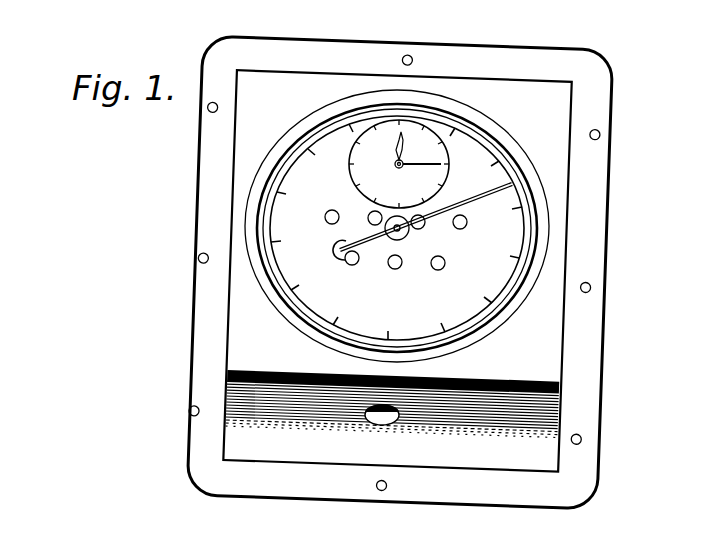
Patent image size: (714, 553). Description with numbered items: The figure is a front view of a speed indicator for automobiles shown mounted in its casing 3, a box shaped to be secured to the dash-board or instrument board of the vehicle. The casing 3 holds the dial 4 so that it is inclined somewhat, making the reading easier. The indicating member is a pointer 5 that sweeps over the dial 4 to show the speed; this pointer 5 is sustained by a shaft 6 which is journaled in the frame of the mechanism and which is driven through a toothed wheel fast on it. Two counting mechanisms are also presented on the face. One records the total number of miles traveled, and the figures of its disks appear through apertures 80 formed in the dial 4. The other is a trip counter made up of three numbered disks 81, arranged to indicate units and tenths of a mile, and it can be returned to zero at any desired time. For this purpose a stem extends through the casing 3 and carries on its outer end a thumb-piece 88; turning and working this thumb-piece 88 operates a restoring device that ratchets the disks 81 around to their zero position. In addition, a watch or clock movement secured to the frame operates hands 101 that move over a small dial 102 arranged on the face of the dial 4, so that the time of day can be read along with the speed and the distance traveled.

The casing 3 is at (545, 323).
The dial 4 is at (500, 230).
The pointer 5 is at (470, 200).
The shaft 6 is at (401, 236).
The apertures 80 is at (368, 222).
The numbered disks 81 is at (388, 268).
The thumb-piece 88 is at (386, 417).
The hands 101 is at (413, 165).
The dial 102 is at (368, 128).